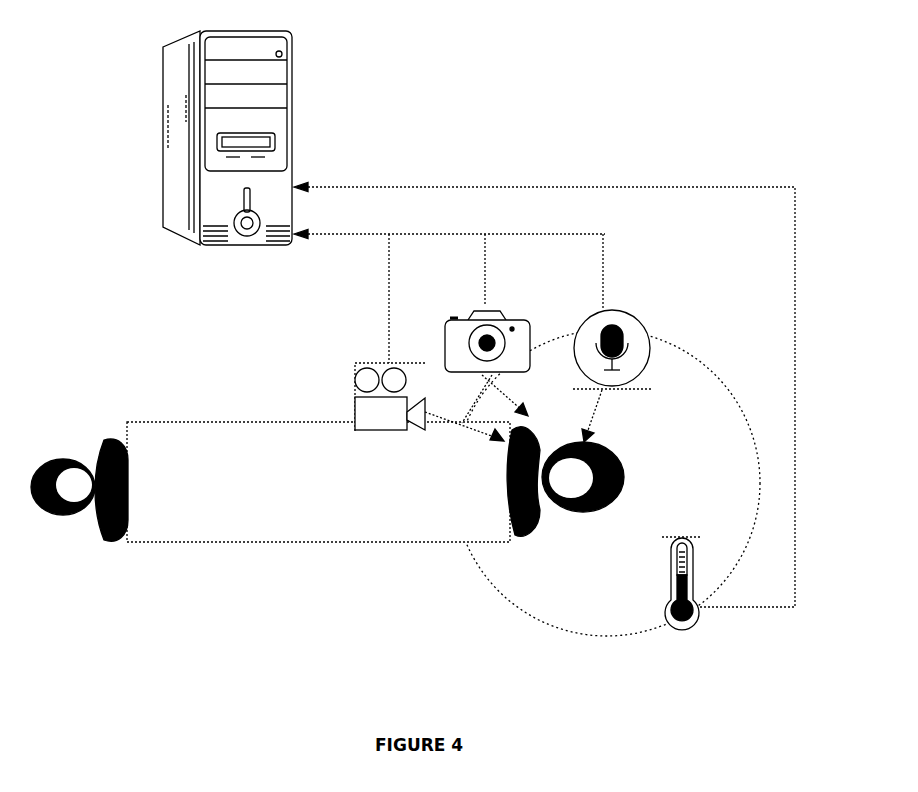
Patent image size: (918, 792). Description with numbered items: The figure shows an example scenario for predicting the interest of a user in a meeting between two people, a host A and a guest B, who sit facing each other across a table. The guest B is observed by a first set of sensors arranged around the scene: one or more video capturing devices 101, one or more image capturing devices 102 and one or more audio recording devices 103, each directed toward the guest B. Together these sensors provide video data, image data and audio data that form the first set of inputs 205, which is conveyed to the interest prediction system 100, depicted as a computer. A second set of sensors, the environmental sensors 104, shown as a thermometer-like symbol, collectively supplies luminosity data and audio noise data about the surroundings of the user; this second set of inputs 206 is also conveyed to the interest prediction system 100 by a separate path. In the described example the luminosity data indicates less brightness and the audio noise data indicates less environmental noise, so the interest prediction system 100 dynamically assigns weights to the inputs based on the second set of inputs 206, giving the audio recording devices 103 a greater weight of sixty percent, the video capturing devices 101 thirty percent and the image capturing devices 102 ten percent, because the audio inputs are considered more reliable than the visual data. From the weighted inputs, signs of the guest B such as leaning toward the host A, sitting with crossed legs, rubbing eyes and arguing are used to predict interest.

The interest prediction system 100 is at (292, 72).
The video capturing devices 101 is at (350, 398).
The image capturing devices 102 is at (467, 308).
The audio recording devices 103 is at (632, 318).
The environmental sensors 104 is at (675, 631).
The first set of inputs 205 is at (345, 236).
The second set of inputs 206 is at (345, 187).
The host A is at (72, 462).
The guest B is at (630, 481).